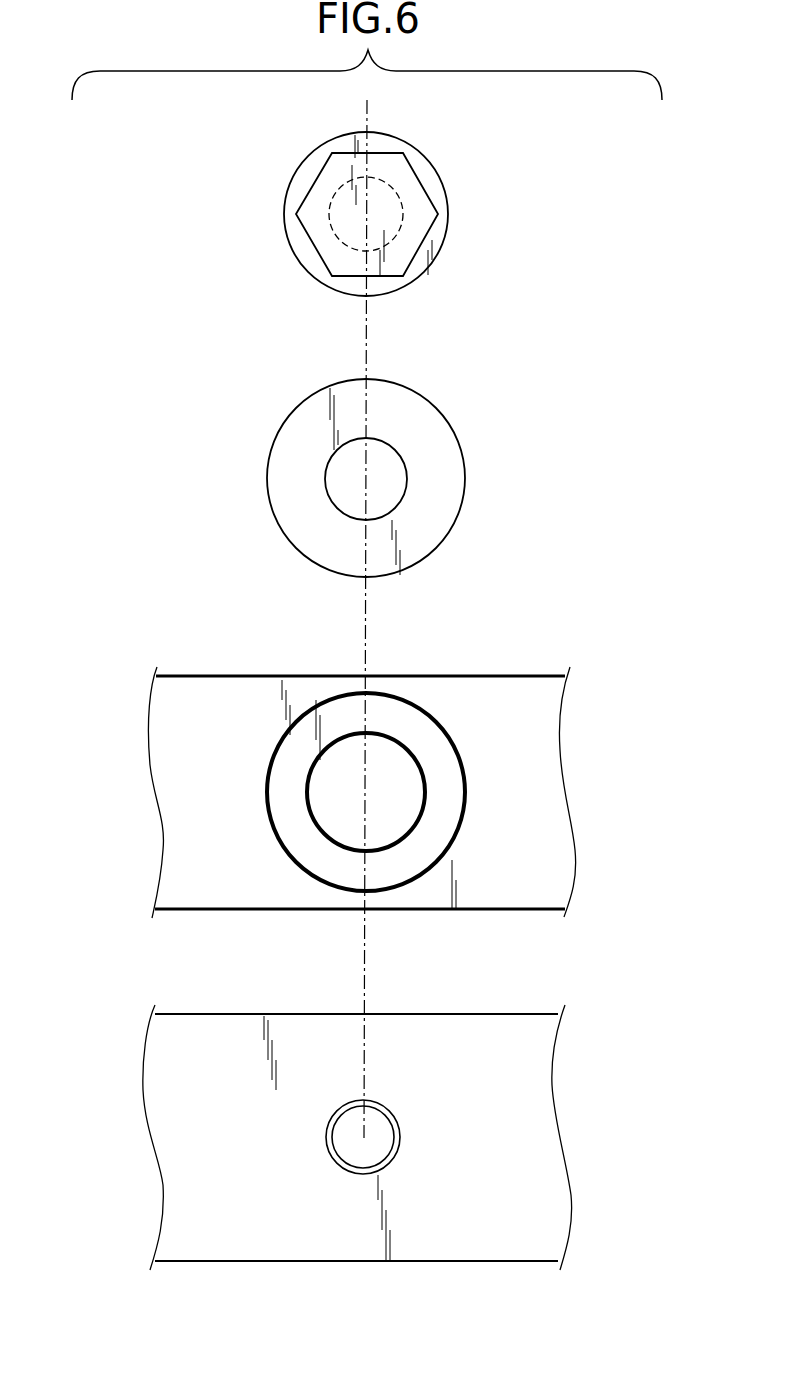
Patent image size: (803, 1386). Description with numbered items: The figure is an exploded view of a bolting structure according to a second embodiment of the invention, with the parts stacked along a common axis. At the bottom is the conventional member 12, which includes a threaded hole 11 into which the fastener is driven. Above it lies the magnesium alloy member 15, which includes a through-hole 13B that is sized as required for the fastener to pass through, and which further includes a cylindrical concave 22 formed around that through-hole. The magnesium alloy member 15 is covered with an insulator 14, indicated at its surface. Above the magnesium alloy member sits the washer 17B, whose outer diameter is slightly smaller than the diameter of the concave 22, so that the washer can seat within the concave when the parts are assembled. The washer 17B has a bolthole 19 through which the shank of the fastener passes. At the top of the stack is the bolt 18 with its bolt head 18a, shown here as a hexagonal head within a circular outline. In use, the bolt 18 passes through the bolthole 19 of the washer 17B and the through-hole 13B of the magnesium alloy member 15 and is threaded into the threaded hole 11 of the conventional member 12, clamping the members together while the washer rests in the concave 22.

The threaded hole 11 is at (388, 1144).
The conventional member 12 is at (146, 1091).
The through-hole 13B is at (312, 808).
The insulator 14 is at (230, 676).
The magnesium alloy member 15 is at (148, 764).
The washer 17B is at (268, 462).
The bolt 18 is at (284, 218).
The bolt head 18a is at (420, 178).
The bolthole 19 is at (396, 500).
The cylindrical concave 22 is at (446, 744).